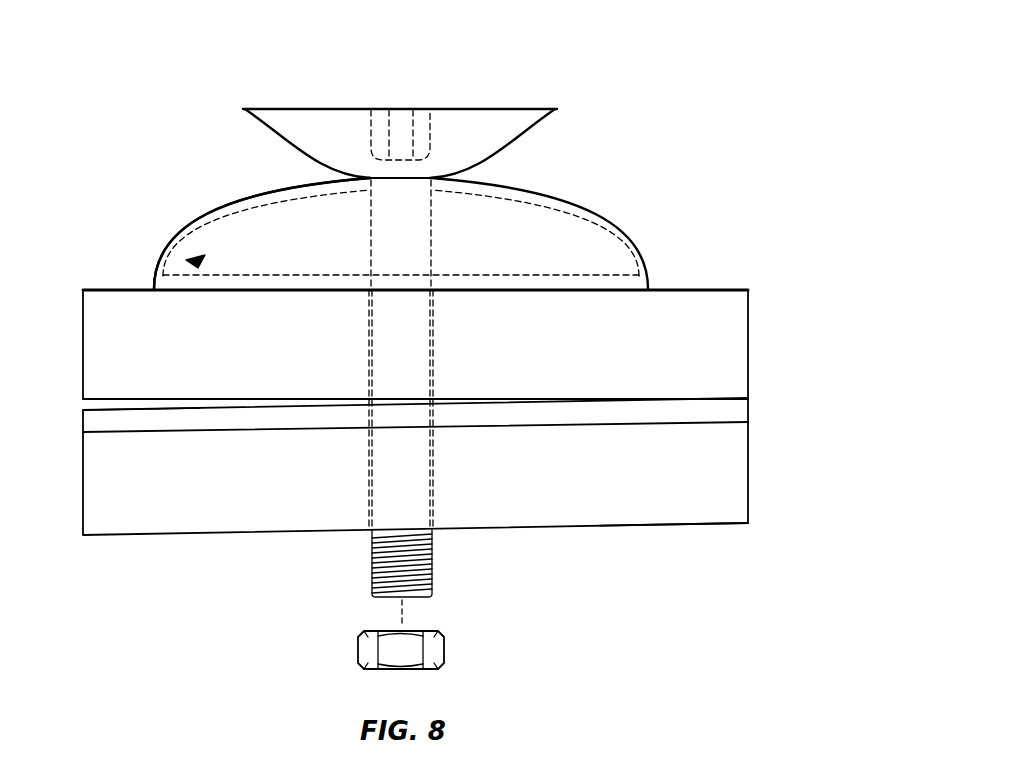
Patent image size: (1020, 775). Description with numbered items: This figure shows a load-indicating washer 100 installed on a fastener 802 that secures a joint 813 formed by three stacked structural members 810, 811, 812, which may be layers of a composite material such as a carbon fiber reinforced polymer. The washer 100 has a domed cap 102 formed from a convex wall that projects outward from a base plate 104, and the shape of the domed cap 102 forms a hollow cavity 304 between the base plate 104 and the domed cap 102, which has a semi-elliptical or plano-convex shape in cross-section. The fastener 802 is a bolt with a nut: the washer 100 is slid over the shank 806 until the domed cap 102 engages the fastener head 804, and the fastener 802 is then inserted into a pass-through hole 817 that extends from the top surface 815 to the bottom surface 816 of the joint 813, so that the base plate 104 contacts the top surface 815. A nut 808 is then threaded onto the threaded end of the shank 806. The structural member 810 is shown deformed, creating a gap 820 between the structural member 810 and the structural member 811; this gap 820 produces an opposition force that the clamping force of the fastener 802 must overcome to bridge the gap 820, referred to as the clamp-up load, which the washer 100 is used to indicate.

The load-indicating washer 100 is at (598, 210).
The domed cap 102 is at (212, 214).
The base plate 104 is at (286, 283).
The cavity 304 is at (162, 270).
The fastener 802 is at (298, 148).
The fastener head 804 is at (462, 109).
The shank 806 is at (434, 559).
The nut 808 is at (358, 644).
The structural member 810 is at (740, 328).
The structural member 811 is at (740, 408).
The structural member 812 is at (740, 458).
The joint 813 is at (835, 290).
The top surface 815 is at (688, 289).
The bottom surface 816 is at (661, 528).
The pass-through hole 817 is at (436, 445).
The gap 820 is at (81, 404).